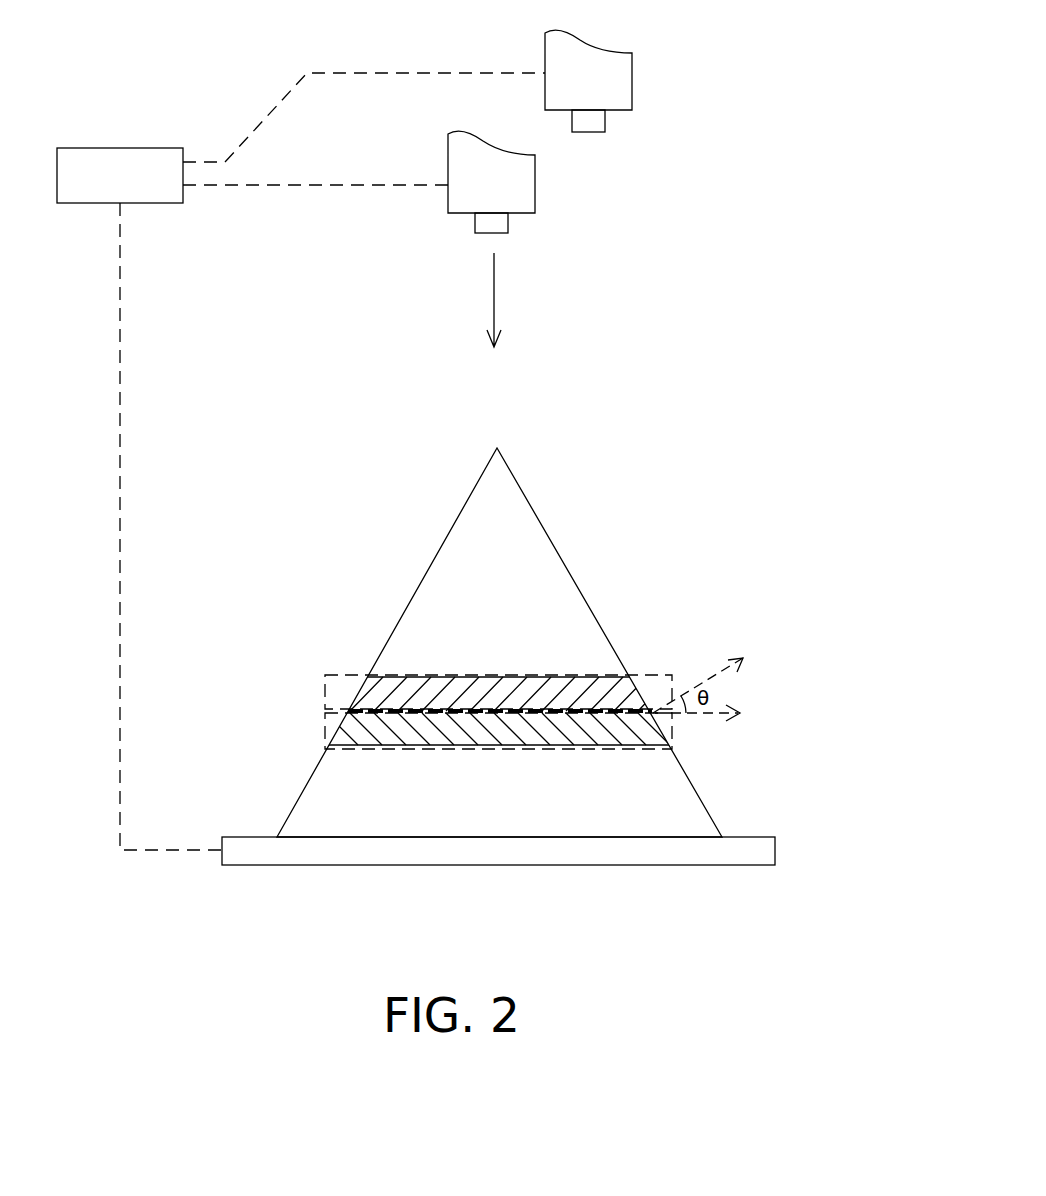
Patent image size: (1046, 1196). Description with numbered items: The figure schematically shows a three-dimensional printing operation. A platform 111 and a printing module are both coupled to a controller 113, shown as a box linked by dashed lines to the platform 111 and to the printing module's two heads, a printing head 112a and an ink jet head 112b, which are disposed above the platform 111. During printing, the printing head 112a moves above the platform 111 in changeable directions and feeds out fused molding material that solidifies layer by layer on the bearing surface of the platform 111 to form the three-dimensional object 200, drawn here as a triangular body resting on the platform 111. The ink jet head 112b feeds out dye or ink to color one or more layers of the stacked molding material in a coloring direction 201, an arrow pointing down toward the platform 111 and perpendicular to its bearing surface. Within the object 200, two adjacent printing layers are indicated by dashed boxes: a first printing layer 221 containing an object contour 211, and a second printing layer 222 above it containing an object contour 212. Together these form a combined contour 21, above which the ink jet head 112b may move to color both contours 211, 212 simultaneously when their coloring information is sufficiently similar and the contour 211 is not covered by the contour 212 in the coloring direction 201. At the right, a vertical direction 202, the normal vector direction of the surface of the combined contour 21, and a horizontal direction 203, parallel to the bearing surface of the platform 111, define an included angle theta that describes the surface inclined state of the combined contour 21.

The controller 113 is at (133, 148).
The printing head 112a is at (632, 82).
The ink jet head 112b is at (535, 183).
The coloring direction 201 is at (494, 298).
The 3D object 200 is at (698, 792).
The platform 111 is at (775, 852).
The combined contour 21 is at (451, 708).
The second contour 212 is at (363, 698).
The first contour 211 is at (347, 731).
The second printing layer 222 is at (352, 674).
The first printing layer 221 is at (352, 750).
The vertical direction 202 is at (700, 687).
The horizontal direction 203 is at (717, 715).